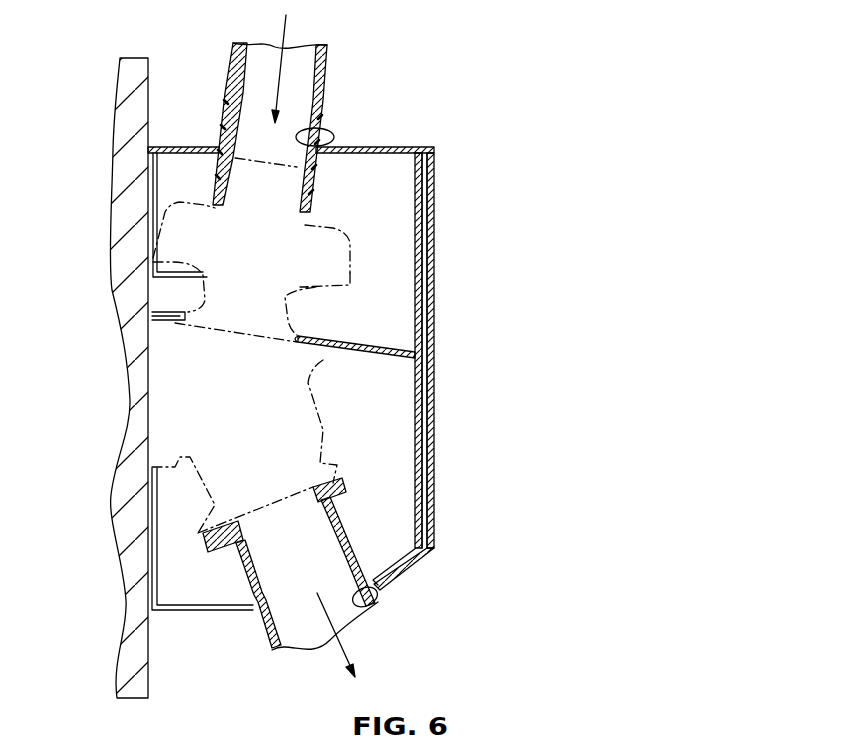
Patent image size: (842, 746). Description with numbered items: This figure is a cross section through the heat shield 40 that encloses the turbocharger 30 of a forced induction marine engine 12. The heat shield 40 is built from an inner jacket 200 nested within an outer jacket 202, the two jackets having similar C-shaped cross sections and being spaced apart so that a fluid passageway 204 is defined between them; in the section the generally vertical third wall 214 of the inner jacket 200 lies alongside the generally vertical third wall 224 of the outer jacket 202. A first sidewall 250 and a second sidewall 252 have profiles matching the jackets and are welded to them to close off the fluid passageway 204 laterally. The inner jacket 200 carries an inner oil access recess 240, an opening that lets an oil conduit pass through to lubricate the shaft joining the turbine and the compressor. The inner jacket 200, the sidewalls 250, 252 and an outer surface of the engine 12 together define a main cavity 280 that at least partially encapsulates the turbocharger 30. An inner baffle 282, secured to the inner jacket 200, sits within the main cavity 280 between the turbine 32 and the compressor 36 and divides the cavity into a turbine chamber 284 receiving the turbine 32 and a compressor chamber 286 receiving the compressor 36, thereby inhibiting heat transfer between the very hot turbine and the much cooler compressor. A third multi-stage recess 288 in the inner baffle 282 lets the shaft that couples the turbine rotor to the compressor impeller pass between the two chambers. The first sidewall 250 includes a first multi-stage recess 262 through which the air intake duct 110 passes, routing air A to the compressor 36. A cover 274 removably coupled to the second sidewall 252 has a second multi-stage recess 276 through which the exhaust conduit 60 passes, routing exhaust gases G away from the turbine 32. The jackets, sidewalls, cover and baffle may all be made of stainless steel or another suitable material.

The engine 12 is at (110, 497).
The turbocharger 30 is at (357, 245).
The turbine 32 is at (323, 440).
The compressor 36 is at (350, 285).
The heat shield 40 is at (343, 359).
The exhaust conduit 60 is at (263, 627).
The air intake duct 110 is at (327, 58).
The inner jacket 200 is at (415, 502).
The outer jacket 202 is at (437, 510).
The fluid passageway 204 is at (423, 263).
The third wall 214 is at (423, 303).
The third wall 224 is at (435, 232).
The inner oil access recess 240 is at (180, 311).
The first sidewall 250 is at (417, 147).
The second sidewall 252 is at (432, 548).
The first multi-stage recess 262 is at (322, 130).
The cover 274 is at (402, 570).
The second multi-stage recess 276 is at (370, 605).
The main cavity 280 is at (393, 442).
The inner baffle 282 is at (377, 349).
The turbine chamber 284 is at (363, 395).
The compressor chamber 286 is at (365, 181).
The third multi-stage recess 288 is at (298, 343).
The air A is at (288, 23).
The exhaust gases G is at (340, 643).